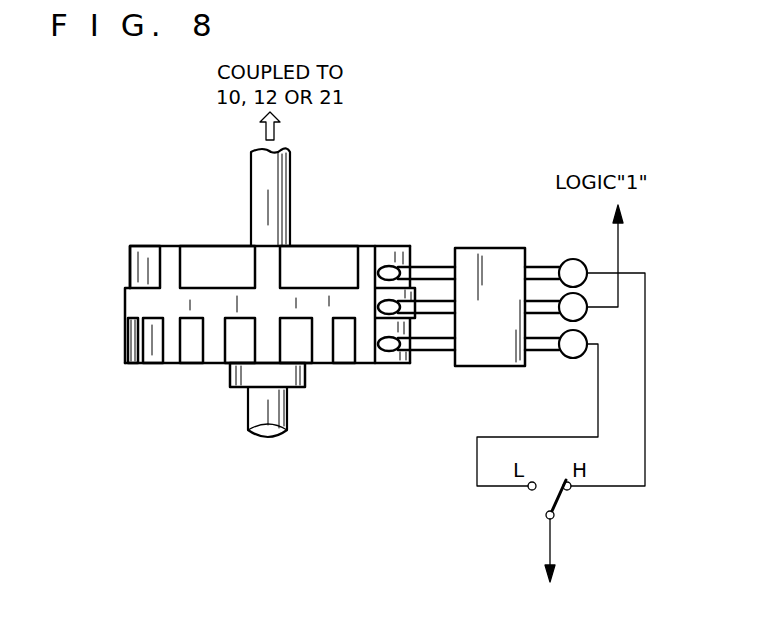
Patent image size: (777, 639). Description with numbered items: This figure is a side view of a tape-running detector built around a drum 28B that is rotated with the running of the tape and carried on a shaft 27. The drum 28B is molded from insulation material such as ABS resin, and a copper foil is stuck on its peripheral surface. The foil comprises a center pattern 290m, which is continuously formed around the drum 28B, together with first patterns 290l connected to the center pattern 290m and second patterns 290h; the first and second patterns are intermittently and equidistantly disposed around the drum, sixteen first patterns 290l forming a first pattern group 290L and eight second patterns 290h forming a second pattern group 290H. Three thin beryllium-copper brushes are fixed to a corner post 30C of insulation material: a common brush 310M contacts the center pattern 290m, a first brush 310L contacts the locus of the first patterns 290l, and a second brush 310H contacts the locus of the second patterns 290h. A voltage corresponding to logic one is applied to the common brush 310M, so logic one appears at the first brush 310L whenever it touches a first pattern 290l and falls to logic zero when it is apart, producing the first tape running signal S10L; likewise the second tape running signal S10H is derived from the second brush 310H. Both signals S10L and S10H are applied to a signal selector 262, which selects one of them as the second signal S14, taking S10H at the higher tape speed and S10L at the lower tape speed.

The shaft 27 is at (266, 170).
The drum 28B is at (151, 244).
The second pattern group 290H is at (116, 263).
The center pattern 290m is at (138, 306).
The first pattern group 290L is at (116, 349).
The second patterns 290h is at (298, 244).
The first patterns 290l is at (216, 364).
The second brush 310H is at (425, 272).
The common brush 310M is at (435, 310).
The first brush 310L is at (383, 366).
The corner post 30C is at (482, 244).
The signal selector 262 is at (562, 503).
The second tape running signal S10H is at (645, 405).
The first tape running signal S10L is at (477, 467).
The second signal S14 is at (551, 565).